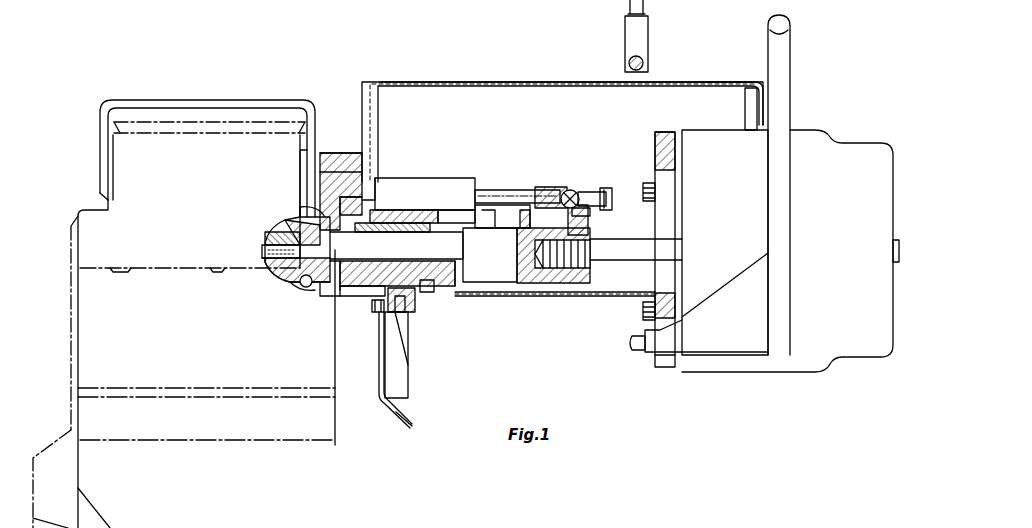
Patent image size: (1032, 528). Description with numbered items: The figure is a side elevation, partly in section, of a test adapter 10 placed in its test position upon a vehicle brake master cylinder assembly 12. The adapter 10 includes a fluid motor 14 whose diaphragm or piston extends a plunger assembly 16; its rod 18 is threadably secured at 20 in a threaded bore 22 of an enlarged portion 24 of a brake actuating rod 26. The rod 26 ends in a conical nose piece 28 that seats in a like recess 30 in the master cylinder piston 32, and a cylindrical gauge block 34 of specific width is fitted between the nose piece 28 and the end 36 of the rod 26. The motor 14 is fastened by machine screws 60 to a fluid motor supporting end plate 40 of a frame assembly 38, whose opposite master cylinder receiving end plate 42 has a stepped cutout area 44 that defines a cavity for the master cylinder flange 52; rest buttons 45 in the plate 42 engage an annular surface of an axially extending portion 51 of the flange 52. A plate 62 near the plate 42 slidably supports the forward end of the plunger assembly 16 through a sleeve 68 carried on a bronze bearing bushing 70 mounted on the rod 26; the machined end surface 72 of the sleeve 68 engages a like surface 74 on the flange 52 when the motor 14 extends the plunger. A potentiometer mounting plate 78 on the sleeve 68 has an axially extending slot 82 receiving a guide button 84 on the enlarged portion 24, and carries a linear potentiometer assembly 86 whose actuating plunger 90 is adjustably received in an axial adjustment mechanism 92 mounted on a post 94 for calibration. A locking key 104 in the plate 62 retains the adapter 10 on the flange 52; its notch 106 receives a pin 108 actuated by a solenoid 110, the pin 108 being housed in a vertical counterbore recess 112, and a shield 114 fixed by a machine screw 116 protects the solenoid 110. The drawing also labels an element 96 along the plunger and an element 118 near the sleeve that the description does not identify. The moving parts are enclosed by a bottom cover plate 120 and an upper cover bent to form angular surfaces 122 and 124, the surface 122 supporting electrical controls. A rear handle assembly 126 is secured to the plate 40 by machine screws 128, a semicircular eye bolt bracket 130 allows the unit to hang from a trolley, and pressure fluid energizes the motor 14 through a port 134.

The test adapter 10 is at (466, 330).
The vehicle brake master cylinder assembly 12 is at (210, 145).
The fluid motor 14 is at (853, 160).
The plunger assembly 16 is at (465, 304).
The rod 18 is at (622, 248).
The threaded connection 20 is at (548, 283).
The threaded bore 22 is at (528, 260).
The enlarged portion 24 is at (492, 298).
The brake actuating rod 26 is at (427, 258).
The conical nose piece 28 is at (262, 258).
The recess 30 is at (272, 235).
The master cylinder piston 32 is at (295, 212).
The cylindrical gauge block 34 is at (295, 277).
The end of rod 36 is at (312, 290).
The frame assembly 38 is at (412, 78).
The fluid motor supporting end plate 40 is at (670, 150).
The master cylinder receiving end plate 42 is at (328, 150).
The stepped cutout area 44 is at (331, 190).
The rest button 45 is at (370, 200).
The axially extending portion 51 is at (352, 262).
The master cylinder flange 52 is at (340, 176).
The machine screws 60 is at (648, 183).
The plate 62 is at (379, 320).
The sleeve 68 is at (340, 292).
The bearing bushing 70 is at (430, 225).
The machined end surface 72 is at (368, 215).
The flange surface 74 is at (332, 292).
The potentiometer mounting plate 78 is at (440, 207).
The axially extending slot 82 is at (490, 190).
The guide button 84 is at (524, 190).
The linear potentiometer assembly 86 is at (425, 185).
The actuating plunger 90 is at (548, 190).
The axial adjustment mechanism 92 is at (594, 188).
The post 94 is at (590, 213).
The push rod 96 is at (512, 298).
The locking key 104 is at (348, 298).
The notch 106 is at (397, 264).
The pin 108 is at (412, 312).
The solenoid 110 is at (404, 386).
The vertical counterbore recess 112 is at (405, 316).
The shield 114 is at (408, 412).
The machine screw 116 is at (376, 312).
The bearing ring 118 is at (430, 292).
The bottom cover plate 120 is at (568, 268).
The angular surface 122 is at (512, 80).
The angular surface 124 is at (685, 92).
The rear handle assembly 126 is at (790, 90).
The machine screws 128 is at (642, 352).
The eye bolt bracket 130 is at (648, 62).
The port 134 is at (898, 263).